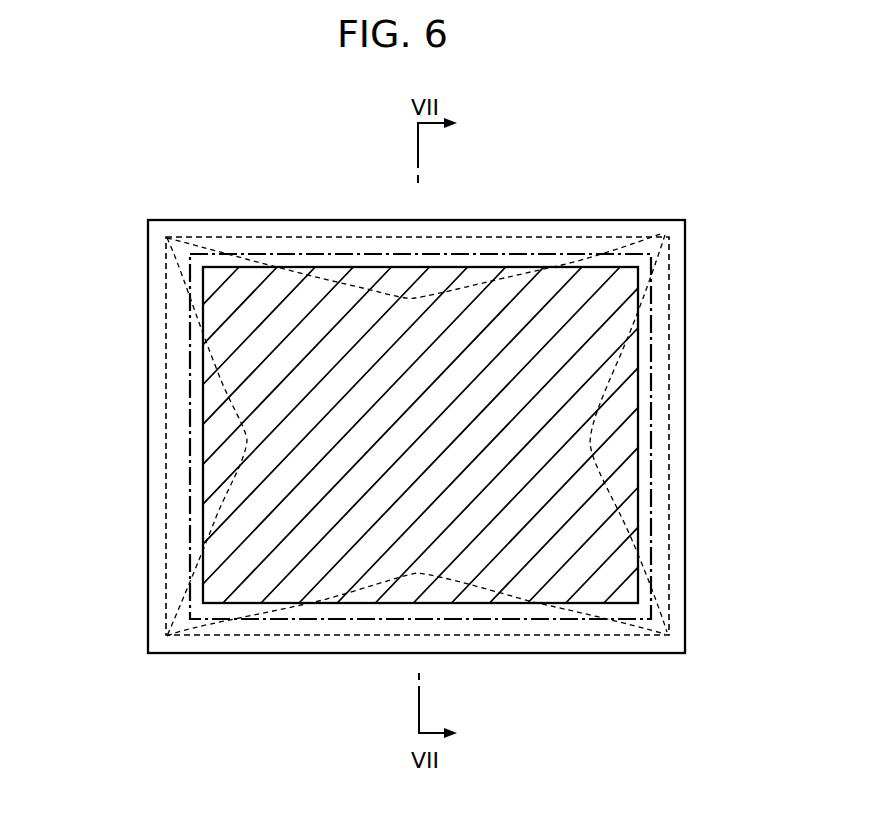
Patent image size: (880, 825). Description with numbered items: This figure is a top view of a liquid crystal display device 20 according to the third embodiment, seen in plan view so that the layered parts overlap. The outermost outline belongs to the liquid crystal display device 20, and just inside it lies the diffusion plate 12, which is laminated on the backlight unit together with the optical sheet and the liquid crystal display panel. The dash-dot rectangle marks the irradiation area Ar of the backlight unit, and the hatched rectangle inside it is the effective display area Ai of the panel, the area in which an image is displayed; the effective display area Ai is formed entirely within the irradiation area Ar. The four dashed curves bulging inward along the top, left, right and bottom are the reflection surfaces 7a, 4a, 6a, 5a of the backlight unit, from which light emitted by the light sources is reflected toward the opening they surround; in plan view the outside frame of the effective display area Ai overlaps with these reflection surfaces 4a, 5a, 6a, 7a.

The liquid crystal display device 20 is at (146, 340).
The diffusion plate 12 is at (677, 303).
The irradiation area Ar is at (572, 620).
The effective display area Ai is at (253, 550).
The reflection surface 7a is at (455, 290).
The reflection surface 4a is at (220, 425).
The reflection surface 6a is at (625, 432).
The reflection surface 5a is at (448, 592).